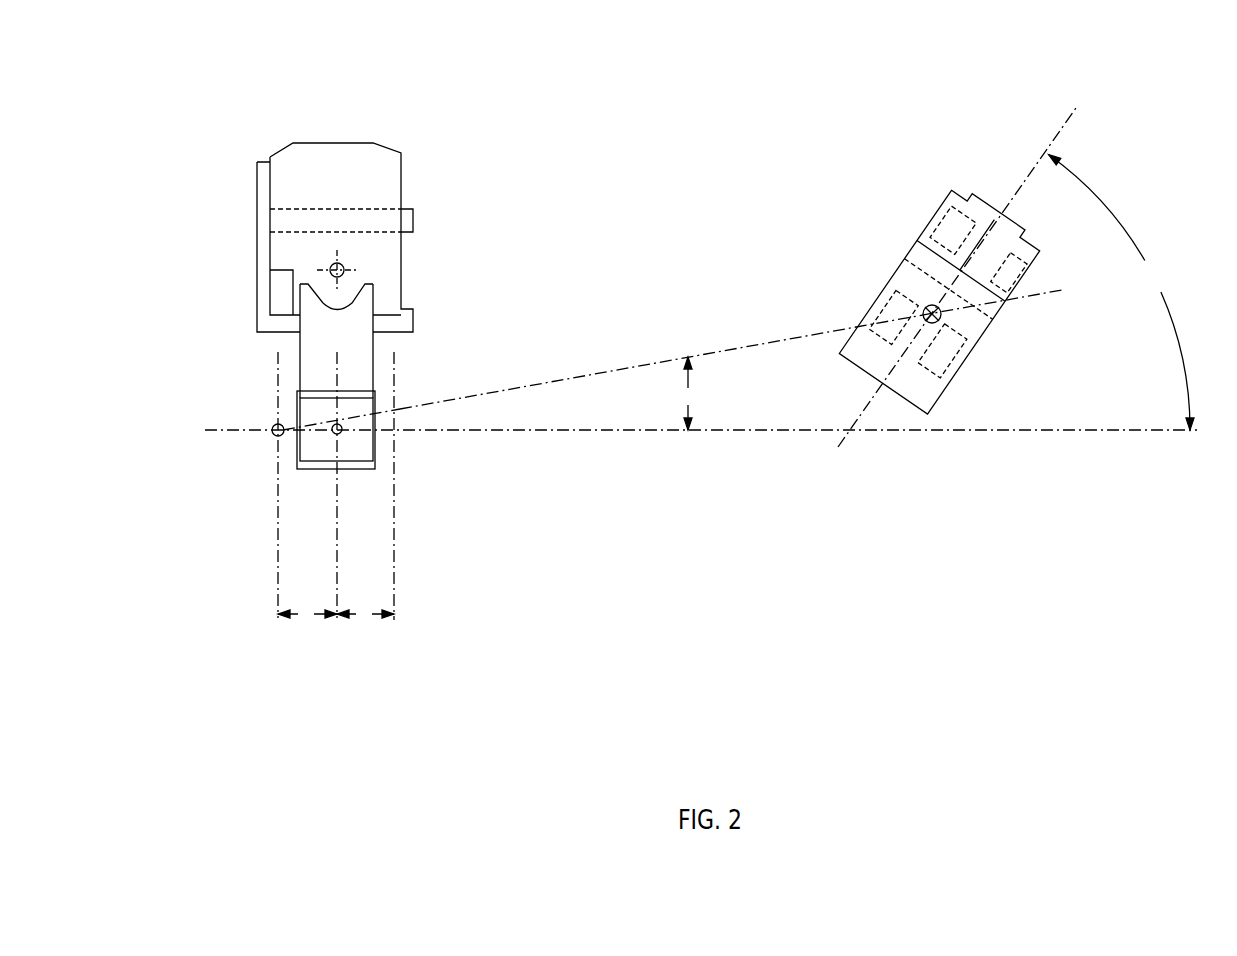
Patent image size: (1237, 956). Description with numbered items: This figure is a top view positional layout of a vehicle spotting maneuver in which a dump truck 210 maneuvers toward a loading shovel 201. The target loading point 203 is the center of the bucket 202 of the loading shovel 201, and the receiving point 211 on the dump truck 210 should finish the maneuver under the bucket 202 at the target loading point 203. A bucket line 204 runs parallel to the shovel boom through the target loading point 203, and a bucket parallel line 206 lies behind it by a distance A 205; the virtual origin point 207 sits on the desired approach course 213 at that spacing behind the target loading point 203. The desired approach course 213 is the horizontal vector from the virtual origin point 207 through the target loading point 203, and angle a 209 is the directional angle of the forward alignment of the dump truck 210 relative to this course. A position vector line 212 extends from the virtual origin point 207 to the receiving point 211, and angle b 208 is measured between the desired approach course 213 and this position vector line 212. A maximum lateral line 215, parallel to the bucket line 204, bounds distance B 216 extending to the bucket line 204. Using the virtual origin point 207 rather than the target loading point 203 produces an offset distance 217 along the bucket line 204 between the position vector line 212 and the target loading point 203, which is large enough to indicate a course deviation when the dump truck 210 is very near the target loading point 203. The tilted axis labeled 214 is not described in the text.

The loading shovel 201 is at (370, 158).
The bucket 202 is at (358, 453).
The target loading point 203 is at (330, 440).
The bucket line 204 is at (340, 517).
The distance A 205 is at (298, 625).
The bucket parallel line 206 is at (268, 560).
The virtual origin point 207 is at (272, 425).
The angle b 208 is at (703, 397).
The angle a 209 is at (1162, 273).
The dump truck 210 is at (952, 195).
The receiving point 211 is at (930, 306).
The position vector line 212 is at (600, 372).
The desired approach course 213 is at (642, 438).
The tilted axis line 214 is at (1035, 162).
The maximum lateral line 215 is at (398, 549).
The distance B 216 is at (375, 625).
The offset distance 217 is at (355, 422).